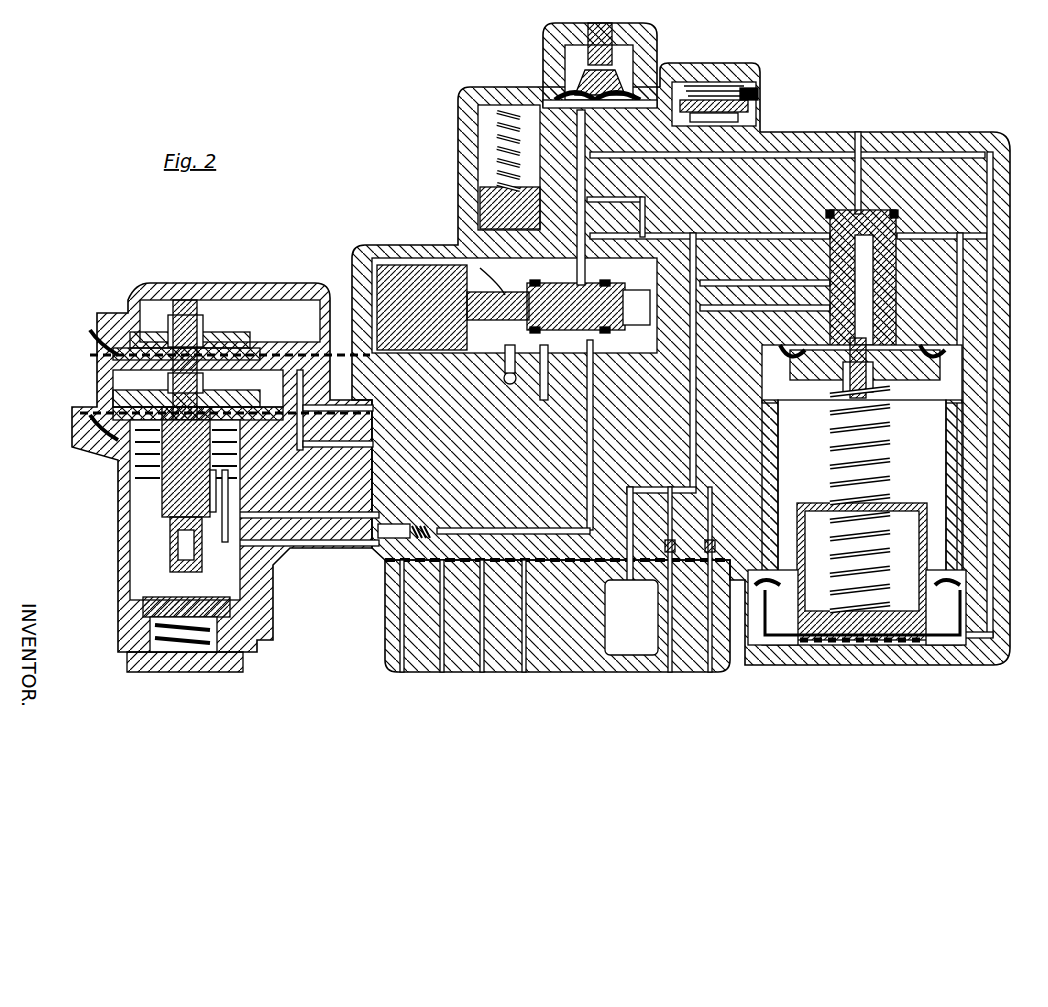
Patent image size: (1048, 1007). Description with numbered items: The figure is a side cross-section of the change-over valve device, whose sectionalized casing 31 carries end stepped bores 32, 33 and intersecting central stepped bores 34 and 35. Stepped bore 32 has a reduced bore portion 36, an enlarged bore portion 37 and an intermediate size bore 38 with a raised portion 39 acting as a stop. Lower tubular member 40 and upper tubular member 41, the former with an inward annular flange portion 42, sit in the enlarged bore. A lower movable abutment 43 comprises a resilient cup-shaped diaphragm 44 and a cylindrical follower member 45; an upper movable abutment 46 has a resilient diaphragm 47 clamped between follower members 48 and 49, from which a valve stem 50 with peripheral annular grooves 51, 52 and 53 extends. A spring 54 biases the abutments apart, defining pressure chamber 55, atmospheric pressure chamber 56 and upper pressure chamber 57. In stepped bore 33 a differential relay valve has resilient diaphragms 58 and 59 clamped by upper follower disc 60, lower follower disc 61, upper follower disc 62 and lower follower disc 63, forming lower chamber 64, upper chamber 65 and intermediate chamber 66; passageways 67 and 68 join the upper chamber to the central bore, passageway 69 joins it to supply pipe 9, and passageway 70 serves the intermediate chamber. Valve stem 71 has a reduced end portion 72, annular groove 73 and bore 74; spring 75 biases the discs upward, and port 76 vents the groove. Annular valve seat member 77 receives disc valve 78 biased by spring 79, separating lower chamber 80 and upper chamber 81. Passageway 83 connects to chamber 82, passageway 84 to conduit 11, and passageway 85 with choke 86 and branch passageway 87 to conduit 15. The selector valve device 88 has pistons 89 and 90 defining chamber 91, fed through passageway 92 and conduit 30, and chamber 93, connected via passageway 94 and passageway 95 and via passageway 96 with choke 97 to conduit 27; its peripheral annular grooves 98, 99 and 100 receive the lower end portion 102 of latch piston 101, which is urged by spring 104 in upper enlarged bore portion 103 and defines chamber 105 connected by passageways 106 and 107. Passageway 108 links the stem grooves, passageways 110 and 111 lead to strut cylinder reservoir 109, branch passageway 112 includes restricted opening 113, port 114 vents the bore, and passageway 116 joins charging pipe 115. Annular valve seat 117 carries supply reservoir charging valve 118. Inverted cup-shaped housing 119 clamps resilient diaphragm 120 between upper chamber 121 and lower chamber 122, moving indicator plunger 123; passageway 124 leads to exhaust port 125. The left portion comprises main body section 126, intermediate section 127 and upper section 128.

The supply pipe 9 is at (523, 690).
The conduit 11 is at (402, 700).
The conduit 15 is at (443, 700).
The conduit 27 is at (669, 700).
The conduit 30 is at (483, 690).
The sectionalized casing 31 is at (915, 140).
The stepped bore 32 is at (960, 588).
The stepped bore 33 is at (130, 470).
The stepped bore 34 is at (590, 283).
The stepped bore 35 is at (468, 232).
The reduced bore portion 36 is at (875, 270).
The enlarged bore portion 37 is at (962, 470).
The intermediate size bore 38 is at (790, 642).
The raised portion 39 is at (820, 642).
The lower tubular member 40 is at (778, 460).
The upper tubular member 41 is at (790, 378).
The annular flange portion 42 is at (792, 420).
The movable abutment 43 is at (928, 547).
The resilient cup-shaped diaphragm 44 is at (875, 642).
The cylindrical follower member 45 is at (930, 642).
The movable abutment 46 is at (937, 347).
The resilient diaphragm 47 is at (905, 358).
The follower member 48 is at (942, 360).
The follower member 49 is at (900, 348).
The valve stem 50 is at (863, 276).
The peripheral annular groove 51 is at (897, 215).
The peripheral annular groove 52 is at (832, 262).
The peripheral annular groove 53 is at (895, 295).
The spring 54 is at (890, 460).
The pressure chamber 55 is at (950, 632).
The pressure chamber 56 is at (1012, 570).
The upper pressure chamber 57 is at (795, 345).
The resilient diaphragm 58 is at (110, 352).
The resilient diaphragm 59 is at (115, 412).
The upper follower disc 60 is at (225, 338).
The lower follower disc 61 is at (80, 380).
The upper follower disc 62 is at (115, 398).
The lower follower disc 63 is at (115, 440).
The lower chamber 64 is at (100, 455).
The upper chamber 65 is at (190, 312).
The intermediate chamber 66 is at (100, 375).
The passageway 67 is at (303, 295).
The passageway 68 is at (608, 360).
The passageway 69 is at (528, 662).
The passageway 70 is at (572, 172).
The valve stem 71 is at (160, 500).
The reduced end portion 72 is at (165, 578).
The annular groove 73 is at (170, 545).
The bore 74 is at (165, 560).
The spring 75 is at (170, 482).
The port 76 is at (130, 525).
The annular valve seat member 77 is at (150, 606).
The disc valve 78 is at (265, 612).
The spring 79 is at (150, 640).
The lower chamber 80 is at (215, 627).
The upper chamber 81 is at (150, 622).
The chamber 82 is at (757, 93).
The passageway 83 is at (595, 130).
The passageway 84 is at (396, 662).
The passageway 85 is at (226, 560).
The choke 86 is at (222, 545).
The branch passageway 87 is at (345, 518).
The selector valve device 88 is at (465, 248).
The piston 89 is at (370, 256).
The piston 90 is at (620, 335).
The chamber 91 is at (372, 275).
The passageway 92 is at (520, 440).
The chamber 93 is at (633, 290).
The passageway 94 is at (645, 200).
The passageway 95 is at (775, 282).
The passageway 96 is at (594, 400).
The choke 97 is at (672, 540).
The peripheral annular groove 98 is at (420, 352).
The peripheral annular groove 99 is at (472, 352).
The peripheral annular groove 100 is at (583, 258).
The latch piston 101 is at (470, 182).
The lower end portion 102 is at (520, 290).
The upper enlarged bore portion 103 is at (478, 120).
The spring 104 is at (497, 145).
The chamber 105 is at (495, 210).
The passageway 106 is at (812, 155).
The passageway 107 is at (897, 236).
The passageway 108 is at (880, 255).
The strut cylinder reservoir 109 is at (632, 650).
The passageway 110 is at (750, 310).
The passageway 111 is at (594, 425).
The branch passageway 112 is at (825, 236).
The restricted opening 113 is at (830, 218).
The port 114 is at (860, 145).
The charging pipe 115 is at (711, 692).
The passageway 116 is at (698, 422).
The annular valve seat 117 is at (740, 115).
The supply reservoir charging valve 118 is at (745, 96).
The inverted cup-shaped housing 119 is at (560, 48).
The resilient diaphragm 120 is at (625, 85).
The upper chamber 121 is at (568, 64).
The lower chamber 122 is at (558, 95).
The indicator plunger 123 is at (612, 45).
The passageway 124 is at (516, 372).
The exhaust port 125 is at (516, 382).
The main body section 126 is at (82, 428).
The intermediate section 127 is at (112, 360).
The upper section 128 is at (125, 300).